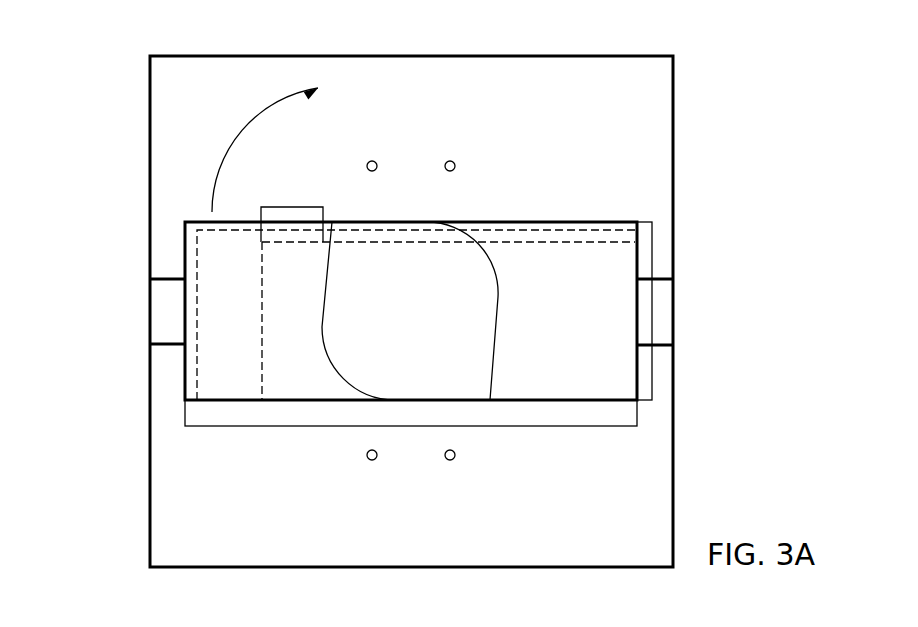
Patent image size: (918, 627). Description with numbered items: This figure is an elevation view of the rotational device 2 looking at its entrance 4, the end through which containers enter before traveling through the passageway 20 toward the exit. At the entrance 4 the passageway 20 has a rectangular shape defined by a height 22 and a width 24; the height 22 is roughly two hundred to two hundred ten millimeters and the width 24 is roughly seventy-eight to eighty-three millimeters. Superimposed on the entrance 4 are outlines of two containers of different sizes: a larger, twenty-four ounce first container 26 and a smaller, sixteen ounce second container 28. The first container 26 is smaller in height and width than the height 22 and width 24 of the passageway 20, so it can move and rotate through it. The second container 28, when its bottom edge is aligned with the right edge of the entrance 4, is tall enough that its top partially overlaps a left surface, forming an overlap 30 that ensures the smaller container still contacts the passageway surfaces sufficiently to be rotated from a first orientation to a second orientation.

The rotational device 2 is at (716, 111).
The entrance 4 is at (566, 222).
The passageway 20 is at (411, 219).
The height 22 is at (516, 427).
The width 24 is at (652, 315).
The first container 26 is at (203, 253).
The second container 28 is at (271, 287).
The overlap 30 is at (294, 205).